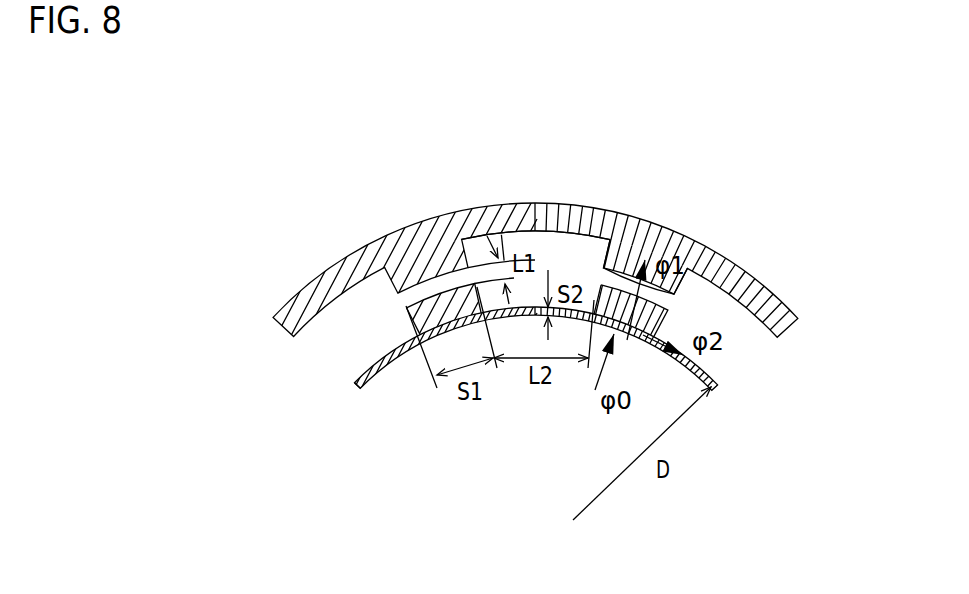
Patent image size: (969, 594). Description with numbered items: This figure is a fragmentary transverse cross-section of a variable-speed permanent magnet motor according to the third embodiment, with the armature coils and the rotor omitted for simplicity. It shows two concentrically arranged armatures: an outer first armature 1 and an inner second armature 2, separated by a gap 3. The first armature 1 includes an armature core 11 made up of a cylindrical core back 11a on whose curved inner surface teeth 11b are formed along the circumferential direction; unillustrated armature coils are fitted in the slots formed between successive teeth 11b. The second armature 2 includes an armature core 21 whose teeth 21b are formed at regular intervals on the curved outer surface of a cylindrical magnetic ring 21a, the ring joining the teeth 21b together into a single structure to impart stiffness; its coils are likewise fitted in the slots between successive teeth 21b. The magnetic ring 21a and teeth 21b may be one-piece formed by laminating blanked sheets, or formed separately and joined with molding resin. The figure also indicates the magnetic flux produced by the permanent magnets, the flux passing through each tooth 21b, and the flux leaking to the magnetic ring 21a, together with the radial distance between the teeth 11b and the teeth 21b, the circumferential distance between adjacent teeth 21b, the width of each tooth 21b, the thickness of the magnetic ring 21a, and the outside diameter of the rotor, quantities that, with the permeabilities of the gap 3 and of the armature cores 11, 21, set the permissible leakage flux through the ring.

The first armature 1 is at (766, 282).
The armature core 11 is at (766, 156).
The cylindrical core back 11a is at (556, 215).
The teeth 11b is at (640, 258).
The second armature 2 is at (393, 363).
The armature core 21 is at (458, 102).
The cylindrical magnetic ring 21a is at (362, 367).
The teeth 21b is at (438, 305).
The gap 3 is at (747, 347).